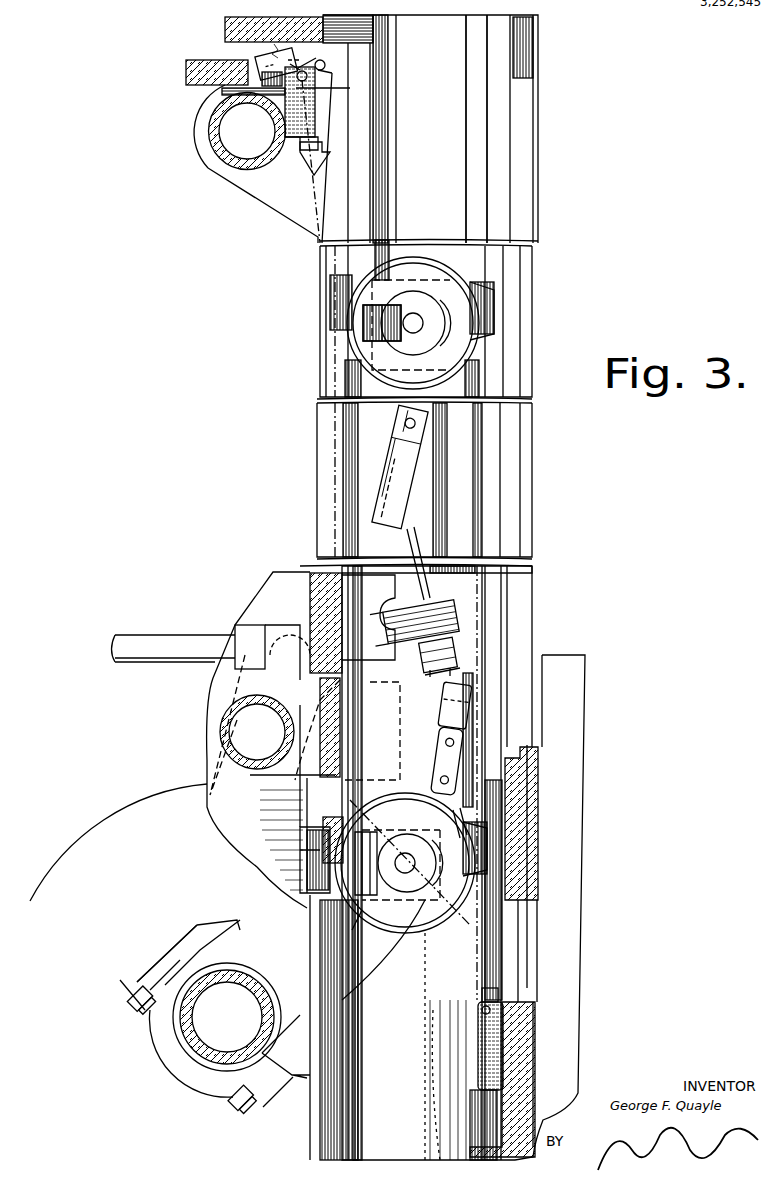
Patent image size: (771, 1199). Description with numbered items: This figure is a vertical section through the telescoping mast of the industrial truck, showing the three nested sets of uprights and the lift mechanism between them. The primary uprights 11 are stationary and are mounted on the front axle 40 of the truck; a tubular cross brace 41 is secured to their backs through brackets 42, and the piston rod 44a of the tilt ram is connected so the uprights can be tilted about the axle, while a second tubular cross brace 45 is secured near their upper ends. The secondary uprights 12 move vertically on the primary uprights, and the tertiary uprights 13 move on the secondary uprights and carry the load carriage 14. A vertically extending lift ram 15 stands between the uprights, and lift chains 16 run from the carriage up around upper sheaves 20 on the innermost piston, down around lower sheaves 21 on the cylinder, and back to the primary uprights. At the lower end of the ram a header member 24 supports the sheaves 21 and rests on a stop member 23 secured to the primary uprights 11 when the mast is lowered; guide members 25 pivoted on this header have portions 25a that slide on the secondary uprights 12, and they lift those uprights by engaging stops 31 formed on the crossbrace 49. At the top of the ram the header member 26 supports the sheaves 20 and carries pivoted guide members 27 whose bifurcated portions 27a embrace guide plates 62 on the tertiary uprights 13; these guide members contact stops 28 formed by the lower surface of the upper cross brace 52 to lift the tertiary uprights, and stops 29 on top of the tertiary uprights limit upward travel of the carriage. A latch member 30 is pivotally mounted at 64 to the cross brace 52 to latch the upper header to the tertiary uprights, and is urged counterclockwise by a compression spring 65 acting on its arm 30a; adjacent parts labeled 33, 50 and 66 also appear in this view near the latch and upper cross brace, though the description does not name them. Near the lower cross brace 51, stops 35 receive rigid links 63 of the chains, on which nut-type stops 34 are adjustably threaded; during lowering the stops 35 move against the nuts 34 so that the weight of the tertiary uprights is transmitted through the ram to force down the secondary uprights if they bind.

The primary uprights 11 is at (476, 172).
The secondary uprights 12 is at (500, 138).
The tertiary uprights 13 is at (396, 35).
The load carriage 14 is at (575, 942).
The lift ram 15 is at (415, 989).
The lift chains 16 is at (335, 462).
The upper sheaves 20 is at (493, 310).
The lower sheaves 21 is at (425, 928).
The stop member 23 is at (300, 866).
The header member 24 is at (487, 840).
The guide members 25 is at (413, 840).
The portions of guide members 25a is at (290, 853).
The header member 26 is at (485, 292).
The guide members 27 is at (413, 305).
The portions of guide members 27a is at (352, 288).
The stops 28 is at (325, 64).
The stops 29 is at (533, 63).
The latch member 30 is at (322, 107).
The arm of latch member 30a is at (262, 56).
The stops 31 is at (345, 780).
The spring 33 is at (340, 92).
The stops 34 is at (455, 655).
The stops 35 is at (455, 610).
The front axle 40 is at (210, 1038).
The tubular cross brace 41 is at (228, 716).
The brackets 42 is at (240, 830).
The piston rod 44a is at (187, 640).
The tubular cross brace 45 is at (215, 165).
The crossbrace 49 is at (315, 690).
The stop block 50 is at (205, 70).
The cross brace 51 is at (310, 582).
The cross brace 52 is at (225, 20).
The guide plates 62 is at (388, 148).
The rigid links 63 is at (428, 586).
The pivot 64 is at (306, 62).
The compression spring 65 is at (293, 42).
The roller 66 is at (280, 100).